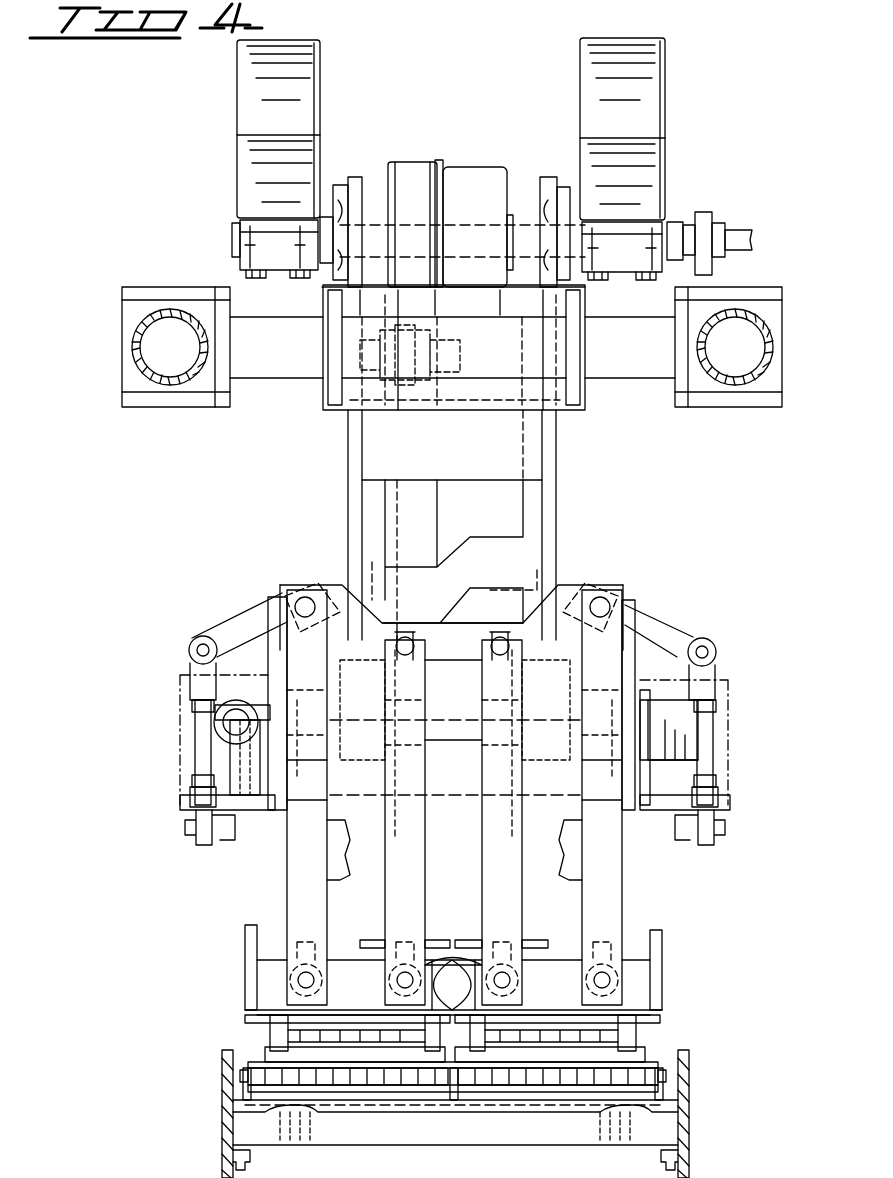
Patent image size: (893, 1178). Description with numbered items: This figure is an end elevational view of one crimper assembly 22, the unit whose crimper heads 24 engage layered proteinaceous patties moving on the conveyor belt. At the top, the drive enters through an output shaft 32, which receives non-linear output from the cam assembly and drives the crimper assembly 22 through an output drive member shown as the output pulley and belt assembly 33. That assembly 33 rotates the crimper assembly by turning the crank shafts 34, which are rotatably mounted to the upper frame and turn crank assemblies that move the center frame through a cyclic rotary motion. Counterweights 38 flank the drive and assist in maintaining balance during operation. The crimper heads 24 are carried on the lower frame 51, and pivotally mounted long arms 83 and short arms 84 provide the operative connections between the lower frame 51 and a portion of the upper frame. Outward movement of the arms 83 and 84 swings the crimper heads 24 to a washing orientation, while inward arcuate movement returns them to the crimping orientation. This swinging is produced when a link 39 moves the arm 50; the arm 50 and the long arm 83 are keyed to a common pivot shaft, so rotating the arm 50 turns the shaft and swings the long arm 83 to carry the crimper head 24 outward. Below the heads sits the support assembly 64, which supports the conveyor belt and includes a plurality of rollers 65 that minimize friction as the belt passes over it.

The crimper assembly 22 is at (580, 566).
The crimper head 24 is at (272, 1053).
The output shaft 32 is at (733, 240).
The output pulley and belt assembly 33 is at (412, 180).
The crank shaft 34 is at (605, 704).
The counterweight 38 is at (237, 113).
The link 39 is at (200, 742).
The arm 50 is at (248, 623).
The lower frame 51 is at (248, 973).
The support assembly 64 is at (665, 1085).
The roller 65 is at (427, 1080).
The long arm 83 is at (295, 884).
The short arm 84 is at (482, 903).